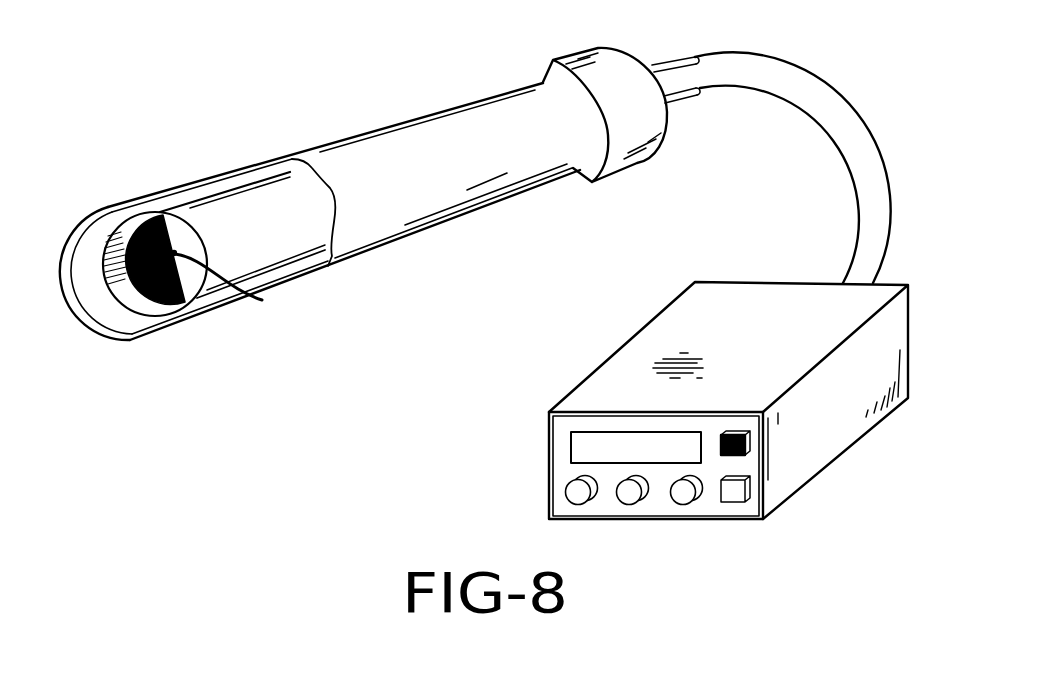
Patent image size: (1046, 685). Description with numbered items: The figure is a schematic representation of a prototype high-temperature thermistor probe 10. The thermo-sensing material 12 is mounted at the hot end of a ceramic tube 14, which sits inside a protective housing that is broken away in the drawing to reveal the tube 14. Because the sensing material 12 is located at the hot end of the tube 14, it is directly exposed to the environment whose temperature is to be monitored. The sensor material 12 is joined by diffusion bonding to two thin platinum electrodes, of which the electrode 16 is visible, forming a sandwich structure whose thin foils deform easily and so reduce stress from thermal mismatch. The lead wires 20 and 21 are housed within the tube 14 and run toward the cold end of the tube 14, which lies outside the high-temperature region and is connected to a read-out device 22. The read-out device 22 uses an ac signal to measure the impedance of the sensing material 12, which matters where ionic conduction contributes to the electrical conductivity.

The thermistor probe 10 is at (408, 124).
The thermo-sensing material 12 is at (102, 263).
The ceramic tube 14 is at (233, 210).
The platinum electrode 16 is at (177, 296).
The lead wire 20 is at (262, 300).
The lead wire 21 is at (822, 82).
The read-out device 22 is at (598, 377).